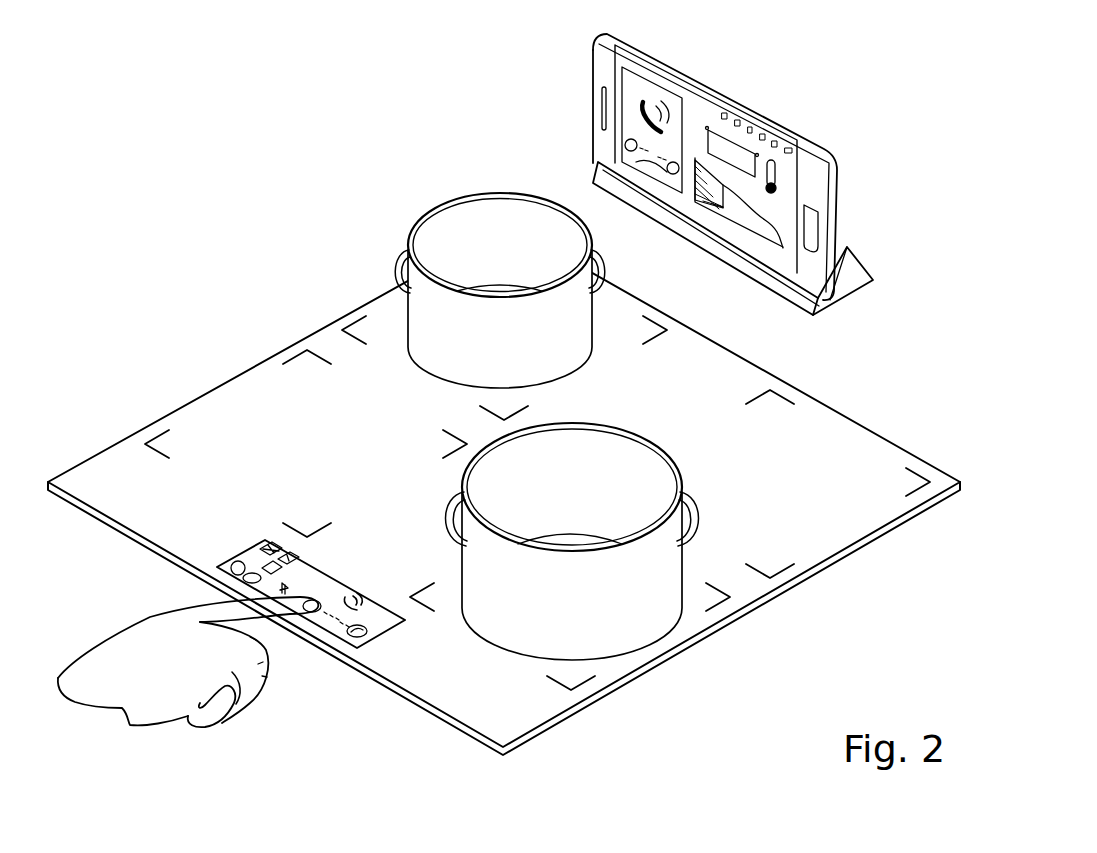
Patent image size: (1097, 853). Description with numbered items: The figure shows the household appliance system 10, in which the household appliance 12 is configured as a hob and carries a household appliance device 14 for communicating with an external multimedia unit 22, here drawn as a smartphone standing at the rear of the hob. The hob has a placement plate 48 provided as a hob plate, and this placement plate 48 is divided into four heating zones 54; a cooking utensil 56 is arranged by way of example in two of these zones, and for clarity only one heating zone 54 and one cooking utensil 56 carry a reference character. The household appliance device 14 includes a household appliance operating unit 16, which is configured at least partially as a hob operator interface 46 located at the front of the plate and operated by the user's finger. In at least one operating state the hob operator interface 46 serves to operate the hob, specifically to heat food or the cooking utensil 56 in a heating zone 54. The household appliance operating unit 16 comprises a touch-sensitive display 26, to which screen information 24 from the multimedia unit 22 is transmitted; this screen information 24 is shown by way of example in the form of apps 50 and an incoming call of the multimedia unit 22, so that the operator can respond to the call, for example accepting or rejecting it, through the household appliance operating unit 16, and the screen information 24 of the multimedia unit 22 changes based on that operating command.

The household appliance system 10 is at (423, 165).
The household appliance 12 is at (220, 360).
The household appliance device 14 is at (160, 398).
The household appliance operating unit 16 is at (185, 588).
The multimedia unit 22 is at (807, 147).
The screen information 24 is at (395, 645).
The display 26 is at (341, 630).
The hob operator interface 46 is at (314, 618).
The placement plate 48 is at (730, 617).
The apps 50 is at (300, 552).
The heating zone 54 is at (381, 330).
The cooking utensil 56 is at (512, 237).